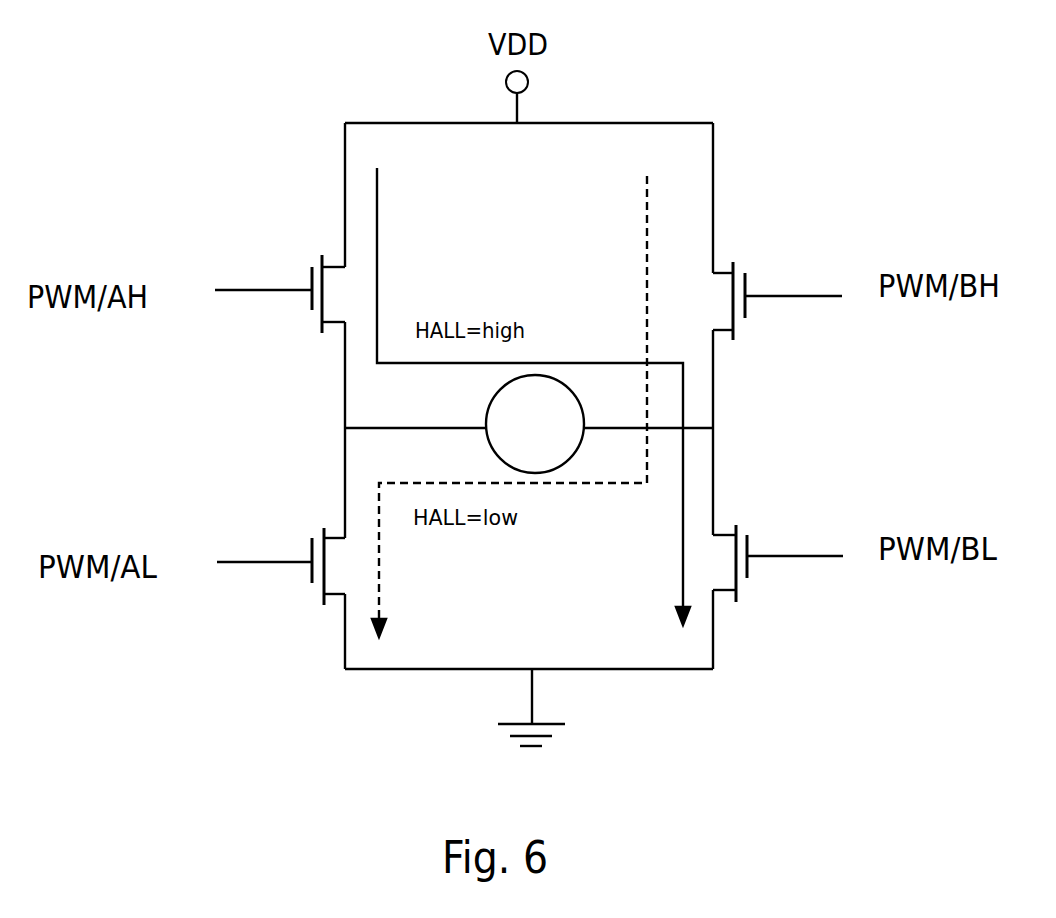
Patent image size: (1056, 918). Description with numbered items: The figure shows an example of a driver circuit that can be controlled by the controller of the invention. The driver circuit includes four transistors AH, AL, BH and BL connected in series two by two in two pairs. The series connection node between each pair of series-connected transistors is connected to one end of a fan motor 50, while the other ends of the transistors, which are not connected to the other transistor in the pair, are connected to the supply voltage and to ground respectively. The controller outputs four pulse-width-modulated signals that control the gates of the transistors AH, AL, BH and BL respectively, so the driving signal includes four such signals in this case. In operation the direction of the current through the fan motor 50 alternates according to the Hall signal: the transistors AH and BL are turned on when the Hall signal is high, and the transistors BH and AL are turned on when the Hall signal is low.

The fan motor 50 is at (545, 452).
The transistor AH is at (280, 273).
The transistor AL is at (281, 544).
The transistor BH is at (777, 278).
The transistor BL is at (778, 540).